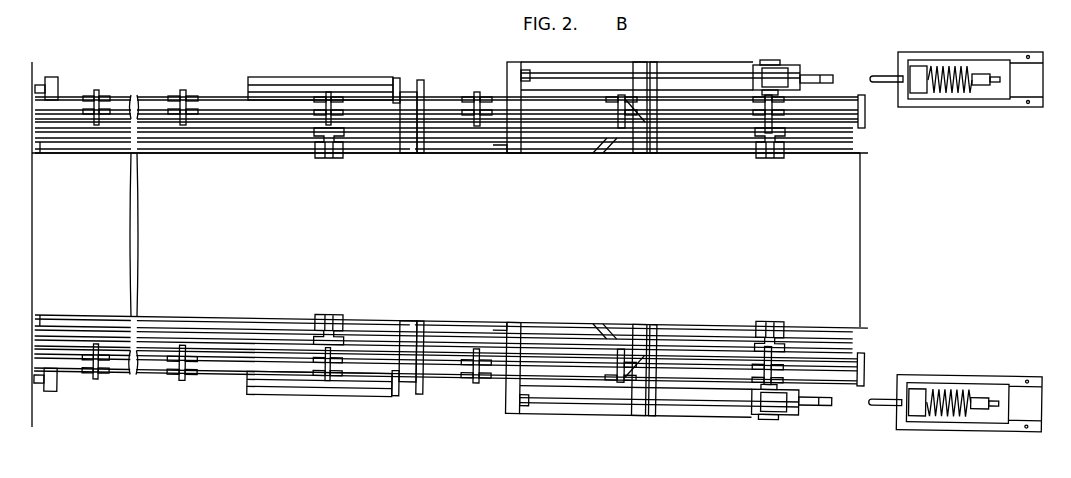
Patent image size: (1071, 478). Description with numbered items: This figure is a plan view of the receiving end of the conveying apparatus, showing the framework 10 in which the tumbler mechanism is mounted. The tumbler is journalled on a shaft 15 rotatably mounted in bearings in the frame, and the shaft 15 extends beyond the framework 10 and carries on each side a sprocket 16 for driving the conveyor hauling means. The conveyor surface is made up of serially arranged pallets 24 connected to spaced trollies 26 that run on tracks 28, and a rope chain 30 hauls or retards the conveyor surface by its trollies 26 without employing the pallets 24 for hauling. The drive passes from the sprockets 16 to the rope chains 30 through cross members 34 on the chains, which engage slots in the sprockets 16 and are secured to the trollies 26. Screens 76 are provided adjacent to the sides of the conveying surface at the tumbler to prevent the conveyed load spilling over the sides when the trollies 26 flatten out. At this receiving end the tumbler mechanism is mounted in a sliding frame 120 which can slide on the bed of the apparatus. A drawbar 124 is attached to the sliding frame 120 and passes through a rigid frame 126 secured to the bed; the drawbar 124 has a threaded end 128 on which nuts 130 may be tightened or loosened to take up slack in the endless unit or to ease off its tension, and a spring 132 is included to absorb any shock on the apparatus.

The framework 10 is at (557, 72).
The shaft 15 is at (768, 65).
The sprocket 16 is at (866, 118).
The pallet 24 is at (848, 212).
The trolley 26 is at (338, 150).
The track 28 is at (248, 132).
The rope chain 30 is at (433, 100).
The cross member 34 is at (184, 97).
The screen 76 is at (832, 150).
The sliding frame 120 is at (730, 408).
The drawbar 124 is at (882, 405).
The rigid frame 126 is at (1007, 383).
The threaded end 128 is at (987, 407).
The nut 130 is at (970, 413).
The spring 132 is at (945, 395).